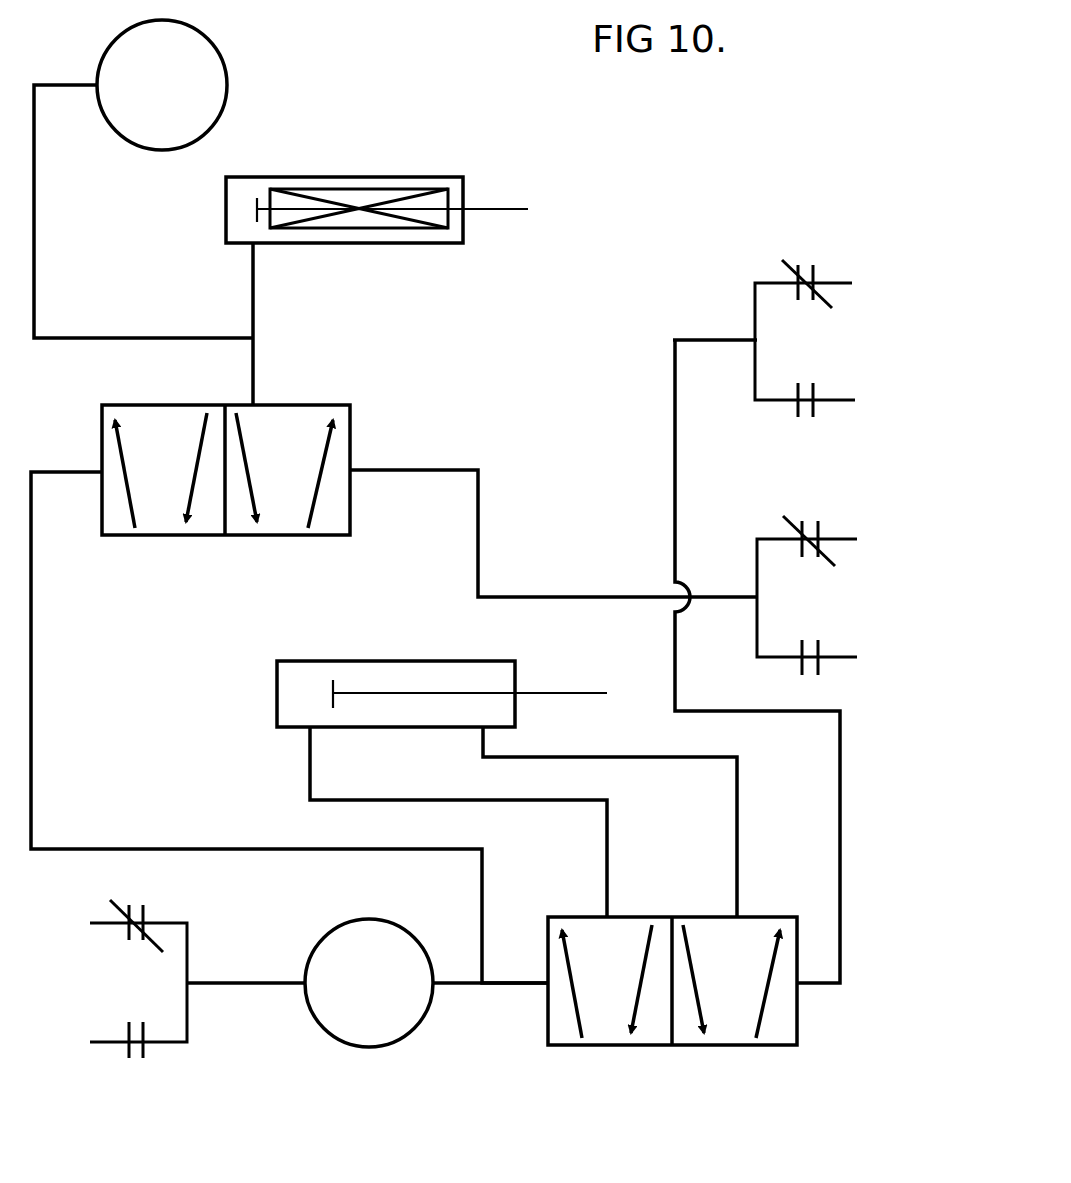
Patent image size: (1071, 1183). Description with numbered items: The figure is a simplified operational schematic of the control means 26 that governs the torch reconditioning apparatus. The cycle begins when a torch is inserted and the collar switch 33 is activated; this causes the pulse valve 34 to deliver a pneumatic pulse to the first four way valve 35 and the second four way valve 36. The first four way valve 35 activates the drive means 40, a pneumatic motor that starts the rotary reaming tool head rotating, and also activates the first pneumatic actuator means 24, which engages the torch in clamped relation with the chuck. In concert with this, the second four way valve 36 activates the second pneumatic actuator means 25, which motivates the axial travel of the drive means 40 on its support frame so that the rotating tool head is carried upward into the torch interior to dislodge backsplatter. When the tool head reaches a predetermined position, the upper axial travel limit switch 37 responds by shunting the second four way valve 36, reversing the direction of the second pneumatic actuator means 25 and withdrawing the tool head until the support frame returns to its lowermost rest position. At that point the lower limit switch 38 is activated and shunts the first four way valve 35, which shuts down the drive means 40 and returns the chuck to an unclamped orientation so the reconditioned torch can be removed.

The first pneumatic actuator means 24 is at (362, 176).
The second pneumatic actuator means 25 is at (323, 661).
The control means 26 is at (608, 255).
The collar switch 33 is at (138, 979).
The pulse valve 34 is at (369, 983).
The first four way valve 35 is at (140, 535).
The second four way valve 36 is at (685, 1045).
The upper axial travel limit switch 37 is at (806, 338).
The lower axial travel limit switch 38 is at (812, 595).
The drive means 40 is at (170, 80).